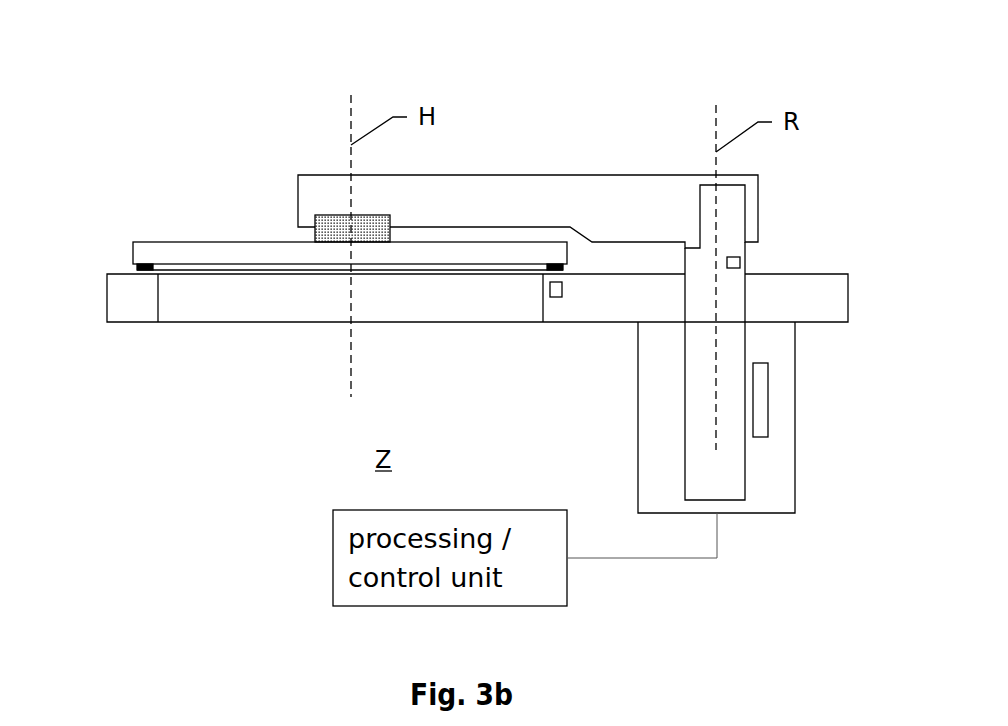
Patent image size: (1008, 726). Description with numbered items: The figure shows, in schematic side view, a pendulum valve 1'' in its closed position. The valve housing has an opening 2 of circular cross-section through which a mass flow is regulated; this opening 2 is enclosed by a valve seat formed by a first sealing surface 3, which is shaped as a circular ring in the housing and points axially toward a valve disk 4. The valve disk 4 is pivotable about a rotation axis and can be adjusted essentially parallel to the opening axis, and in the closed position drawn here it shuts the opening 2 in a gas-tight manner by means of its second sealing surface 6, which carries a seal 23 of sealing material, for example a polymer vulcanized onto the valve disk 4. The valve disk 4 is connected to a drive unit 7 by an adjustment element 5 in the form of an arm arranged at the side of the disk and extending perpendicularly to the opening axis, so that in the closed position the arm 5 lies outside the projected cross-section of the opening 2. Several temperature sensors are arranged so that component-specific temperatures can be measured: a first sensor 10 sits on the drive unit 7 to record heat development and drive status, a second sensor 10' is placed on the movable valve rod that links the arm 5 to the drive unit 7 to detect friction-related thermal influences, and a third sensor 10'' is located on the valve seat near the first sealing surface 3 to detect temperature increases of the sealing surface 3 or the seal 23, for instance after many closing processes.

The pendulum valve 1'' is at (204, 83).
The opening 2 is at (477, 327).
The first sealing surface 3 is at (103, 304).
The valve disk 4 is at (350, 233).
The adjustment element 5 is at (528, 186).
The second sealing surface 6 is at (127, 265).
The drive unit 7 is at (686, 377).
The first temperature sensor 10 is at (812, 407).
The second temperature sensor 10' is at (792, 252).
The third temperature sensor 10'' is at (516, 337).
The seal 23 is at (323, 232).